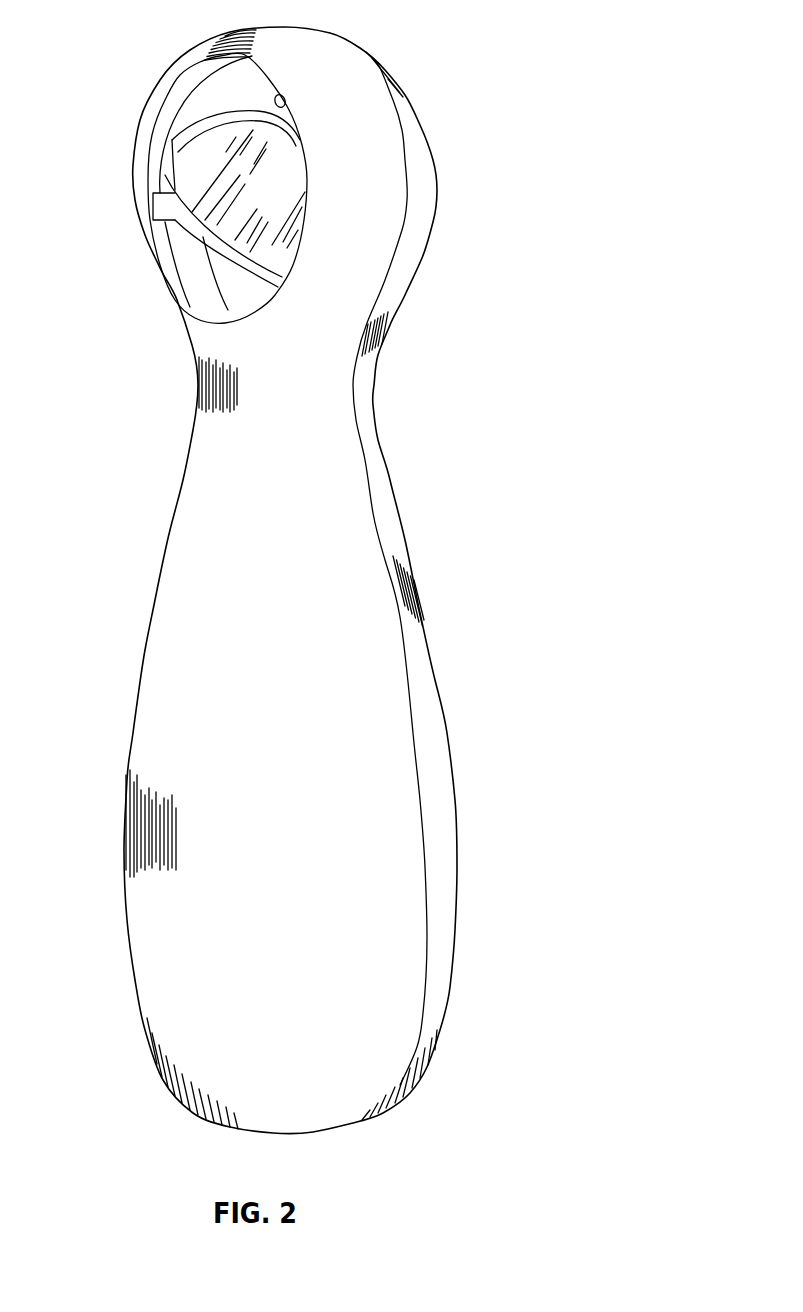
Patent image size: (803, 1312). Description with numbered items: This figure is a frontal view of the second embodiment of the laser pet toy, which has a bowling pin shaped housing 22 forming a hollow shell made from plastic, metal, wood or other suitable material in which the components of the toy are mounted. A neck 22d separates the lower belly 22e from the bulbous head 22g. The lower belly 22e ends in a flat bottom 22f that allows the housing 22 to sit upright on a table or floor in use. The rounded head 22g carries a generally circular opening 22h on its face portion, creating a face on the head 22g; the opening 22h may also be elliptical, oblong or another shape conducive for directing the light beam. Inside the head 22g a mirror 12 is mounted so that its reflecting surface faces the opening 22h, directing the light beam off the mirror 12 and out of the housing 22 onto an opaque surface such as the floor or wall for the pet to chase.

The mirror 12 is at (183, 167).
The housing 22 is at (293, 755).
The neck 22d is at (342, 403).
The lower belly 22e is at (408, 887).
The flat bottom 22f is at (383, 1115).
The bulbous head 22g is at (387, 177).
The opening 22h is at (281, 96).